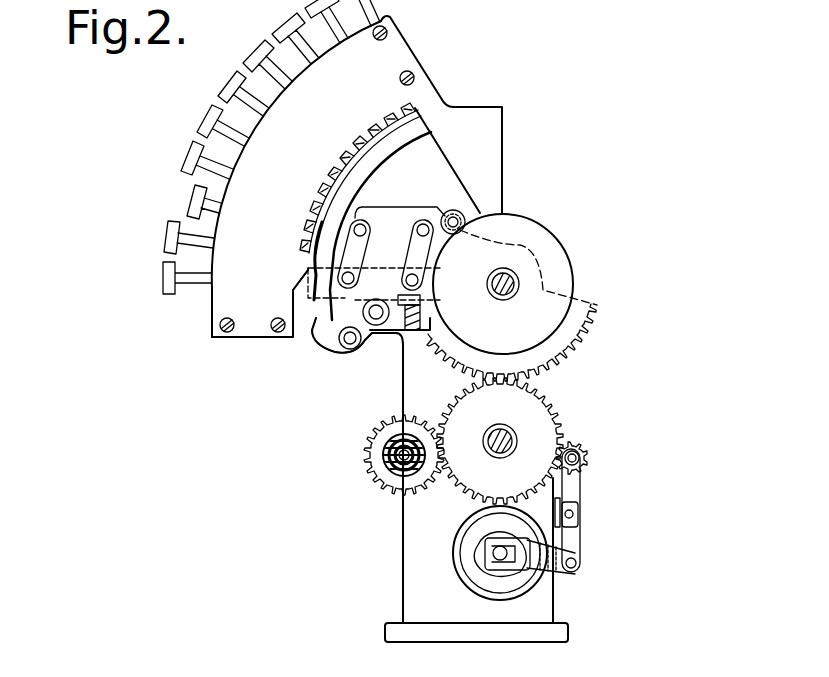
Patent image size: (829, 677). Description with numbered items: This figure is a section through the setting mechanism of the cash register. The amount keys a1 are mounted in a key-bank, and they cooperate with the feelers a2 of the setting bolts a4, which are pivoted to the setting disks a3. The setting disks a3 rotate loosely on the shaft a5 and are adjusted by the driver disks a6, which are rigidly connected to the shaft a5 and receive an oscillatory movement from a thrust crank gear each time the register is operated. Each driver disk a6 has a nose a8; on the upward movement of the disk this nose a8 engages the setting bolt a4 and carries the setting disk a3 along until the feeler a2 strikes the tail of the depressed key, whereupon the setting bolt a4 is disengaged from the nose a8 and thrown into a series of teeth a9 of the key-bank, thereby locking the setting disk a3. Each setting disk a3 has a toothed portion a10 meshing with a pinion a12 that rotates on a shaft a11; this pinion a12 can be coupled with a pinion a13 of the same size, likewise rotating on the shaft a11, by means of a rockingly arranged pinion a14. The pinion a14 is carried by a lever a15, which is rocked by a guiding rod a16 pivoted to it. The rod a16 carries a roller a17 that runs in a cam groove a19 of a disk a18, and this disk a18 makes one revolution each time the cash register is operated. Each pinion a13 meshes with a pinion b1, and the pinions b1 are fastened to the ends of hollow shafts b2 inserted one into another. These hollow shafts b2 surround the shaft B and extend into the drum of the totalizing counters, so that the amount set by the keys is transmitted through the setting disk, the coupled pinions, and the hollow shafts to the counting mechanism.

The amount keys a1 is at (212, 108).
The feelers a2 is at (318, 330).
The setting disks a3 is at (398, 210).
The setting bolts a4 is at (312, 262).
The shaft a5 is at (503, 298).
The driver disks a6 is at (528, 230).
The nose a8 is at (432, 298).
The teeth a9 is at (352, 150).
The toothed portion a10 is at (582, 340).
The shaft a11 is at (505, 450).
The pinion a12 is at (545, 395).
The pinion a13 is at (636, 392).
The rockingly arranged pinion a14 is at (590, 455).
The lever a15 is at (576, 526).
The guiding rod a16 is at (562, 574).
The roller a17 is at (540, 584).
The disk a18 is at (452, 545).
The cam groove a19 is at (470, 572).
The pinion b1 is at (392, 420).
The hollow shafts b2 is at (390, 452).
The shaft B is at (398, 490).